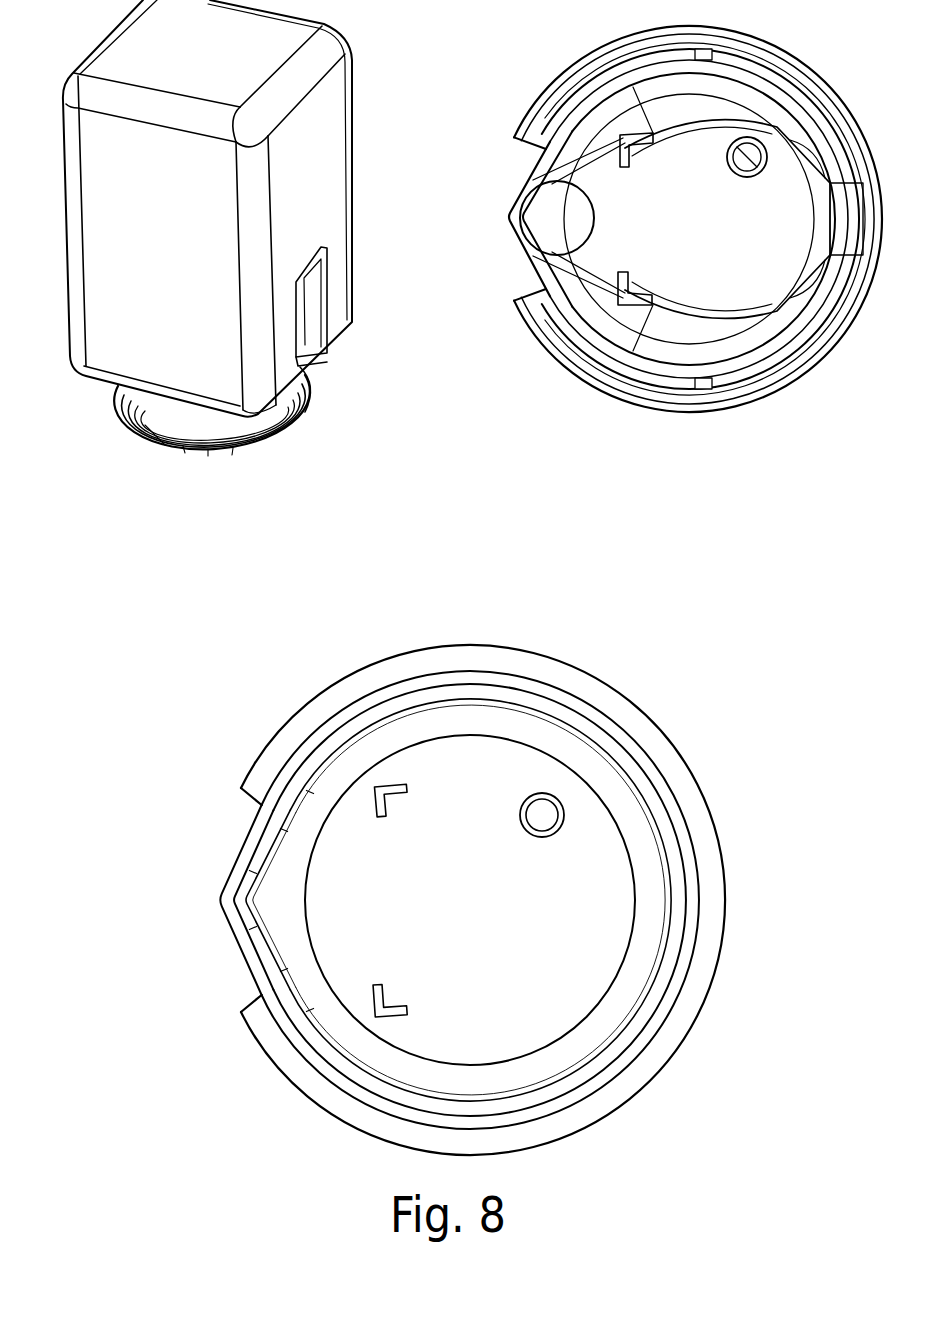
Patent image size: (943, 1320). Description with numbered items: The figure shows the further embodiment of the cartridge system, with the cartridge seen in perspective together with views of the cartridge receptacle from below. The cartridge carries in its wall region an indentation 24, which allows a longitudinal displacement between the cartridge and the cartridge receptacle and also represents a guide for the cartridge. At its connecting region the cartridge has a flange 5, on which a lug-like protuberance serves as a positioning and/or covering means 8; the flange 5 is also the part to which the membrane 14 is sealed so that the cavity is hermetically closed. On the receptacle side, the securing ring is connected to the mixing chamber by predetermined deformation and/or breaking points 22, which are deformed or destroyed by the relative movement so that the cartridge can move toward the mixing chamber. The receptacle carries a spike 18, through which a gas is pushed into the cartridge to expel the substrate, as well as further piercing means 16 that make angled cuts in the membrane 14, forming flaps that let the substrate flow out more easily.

The flange 5 is at (530, 730).
The positioning and/or covering means 8 is at (176, 452).
The membrane 14 is at (580, 900).
The piercing means 16 is at (392, 786).
The spike 18 is at (559, 797).
The predetermined deformation and/or breaking points 22 is at (232, 905).
The indentation 24 is at (316, 316).